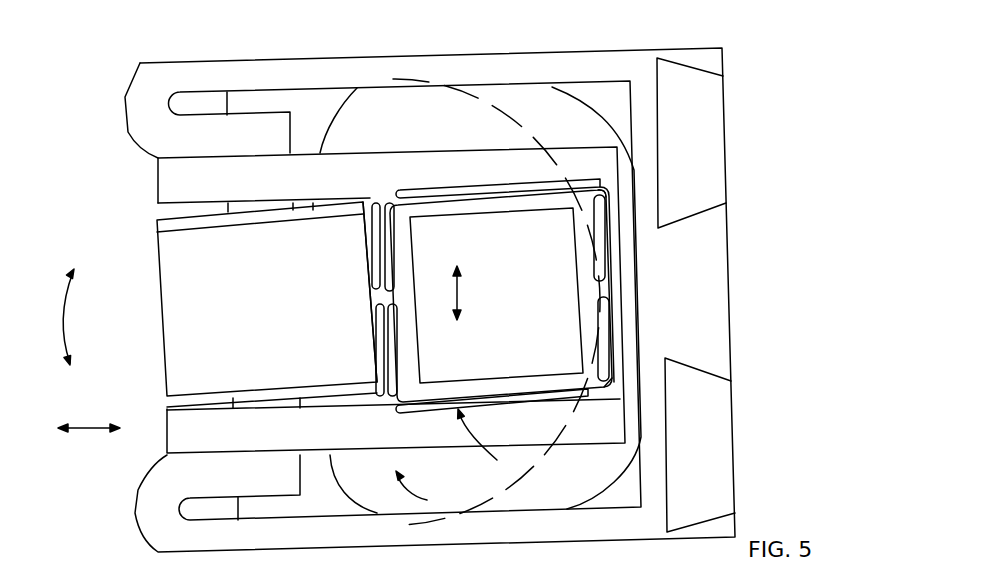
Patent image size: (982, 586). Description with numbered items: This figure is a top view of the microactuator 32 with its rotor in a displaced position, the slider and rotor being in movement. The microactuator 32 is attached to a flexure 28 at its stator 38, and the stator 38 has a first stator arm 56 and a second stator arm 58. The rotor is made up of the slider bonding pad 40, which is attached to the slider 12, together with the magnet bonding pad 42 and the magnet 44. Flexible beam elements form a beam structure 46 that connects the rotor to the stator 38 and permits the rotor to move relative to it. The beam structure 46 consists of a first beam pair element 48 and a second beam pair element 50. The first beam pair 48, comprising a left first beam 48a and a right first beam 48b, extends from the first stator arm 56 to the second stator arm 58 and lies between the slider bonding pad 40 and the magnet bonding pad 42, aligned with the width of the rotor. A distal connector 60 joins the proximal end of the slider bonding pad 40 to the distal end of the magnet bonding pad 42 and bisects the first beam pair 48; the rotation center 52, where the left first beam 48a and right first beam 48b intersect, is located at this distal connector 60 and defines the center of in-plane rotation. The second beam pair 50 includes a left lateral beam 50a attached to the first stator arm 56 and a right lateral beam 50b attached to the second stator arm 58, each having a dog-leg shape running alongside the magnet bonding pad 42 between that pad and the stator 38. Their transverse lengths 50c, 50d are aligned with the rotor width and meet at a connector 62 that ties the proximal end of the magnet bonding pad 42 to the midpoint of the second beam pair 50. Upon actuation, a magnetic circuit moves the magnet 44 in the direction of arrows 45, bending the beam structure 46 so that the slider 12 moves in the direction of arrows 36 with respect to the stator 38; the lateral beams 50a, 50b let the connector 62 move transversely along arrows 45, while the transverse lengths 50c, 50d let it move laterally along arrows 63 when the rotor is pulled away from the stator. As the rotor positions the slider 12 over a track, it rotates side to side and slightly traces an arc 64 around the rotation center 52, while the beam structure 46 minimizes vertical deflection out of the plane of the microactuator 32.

The slider 12 is at (178, 262).
The flexure 28 is at (718, 465).
The microactuator 32 is at (425, 491).
The arrows 36 is at (68, 316).
The stator 38 is at (340, 172).
The slider bonding pad 40 is at (160, 231).
The magnet bonding pad 42 is at (583, 245).
The magnet 44 is at (572, 310).
The arrows 45 is at (470, 293).
The beam structure 46 is at (485, 445).
The first beam pair element 48 is at (376, 254).
The left first beam 48a is at (366, 203).
The right first beam 48b is at (368, 400).
The second beam pair element 50 is at (616, 206).
The left lateral beam 50a is at (455, 190).
The right lateral beam 50b is at (510, 400).
The transverse length 50c is at (608, 224).
The transverse length 50d is at (613, 382).
The rotation center 52 is at (380, 300).
The first stator arm 56 is at (172, 168).
The second stator arm 58 is at (178, 437).
The distal connector 60 is at (378, 300).
The connector 62 is at (601, 283).
The arrows 63 is at (87, 423).
The arc 64 is at (507, 115).